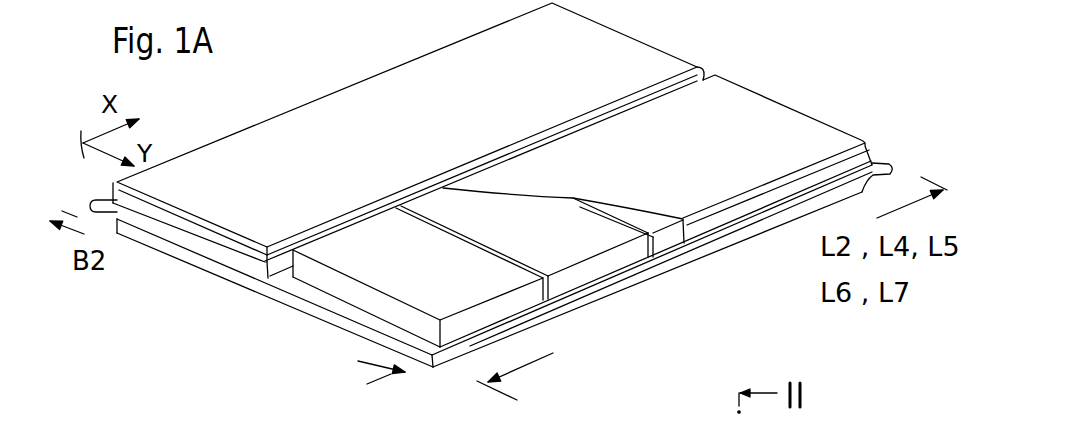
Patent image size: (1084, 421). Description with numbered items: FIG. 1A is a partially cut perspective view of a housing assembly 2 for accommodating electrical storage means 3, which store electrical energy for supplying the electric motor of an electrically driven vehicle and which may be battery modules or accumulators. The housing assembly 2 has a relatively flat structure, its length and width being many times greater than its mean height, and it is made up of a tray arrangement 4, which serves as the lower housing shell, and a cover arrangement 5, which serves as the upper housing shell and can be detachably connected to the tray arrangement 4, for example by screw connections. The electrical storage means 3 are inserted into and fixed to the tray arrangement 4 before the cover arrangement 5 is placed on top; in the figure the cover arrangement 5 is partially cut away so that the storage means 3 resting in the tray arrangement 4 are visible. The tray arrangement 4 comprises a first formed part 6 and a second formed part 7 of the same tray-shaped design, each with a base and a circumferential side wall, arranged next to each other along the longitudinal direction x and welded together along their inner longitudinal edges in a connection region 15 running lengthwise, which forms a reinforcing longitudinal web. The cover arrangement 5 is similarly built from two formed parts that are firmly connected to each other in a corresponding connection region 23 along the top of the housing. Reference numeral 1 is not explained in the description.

The device assembly 1 is at (450, 62).
The housing assembly 2 is at (334, 70).
The electrical storage means 3 is at (557, 228).
The tray arrangement 4 is at (247, 354).
The cover arrangement 5 is at (656, 246).
The first formed part 6 is at (363, 336).
The second formed part 7 is at (182, 250).
The connection region 15 is at (271, 297).
The connection region 23 is at (684, 75).